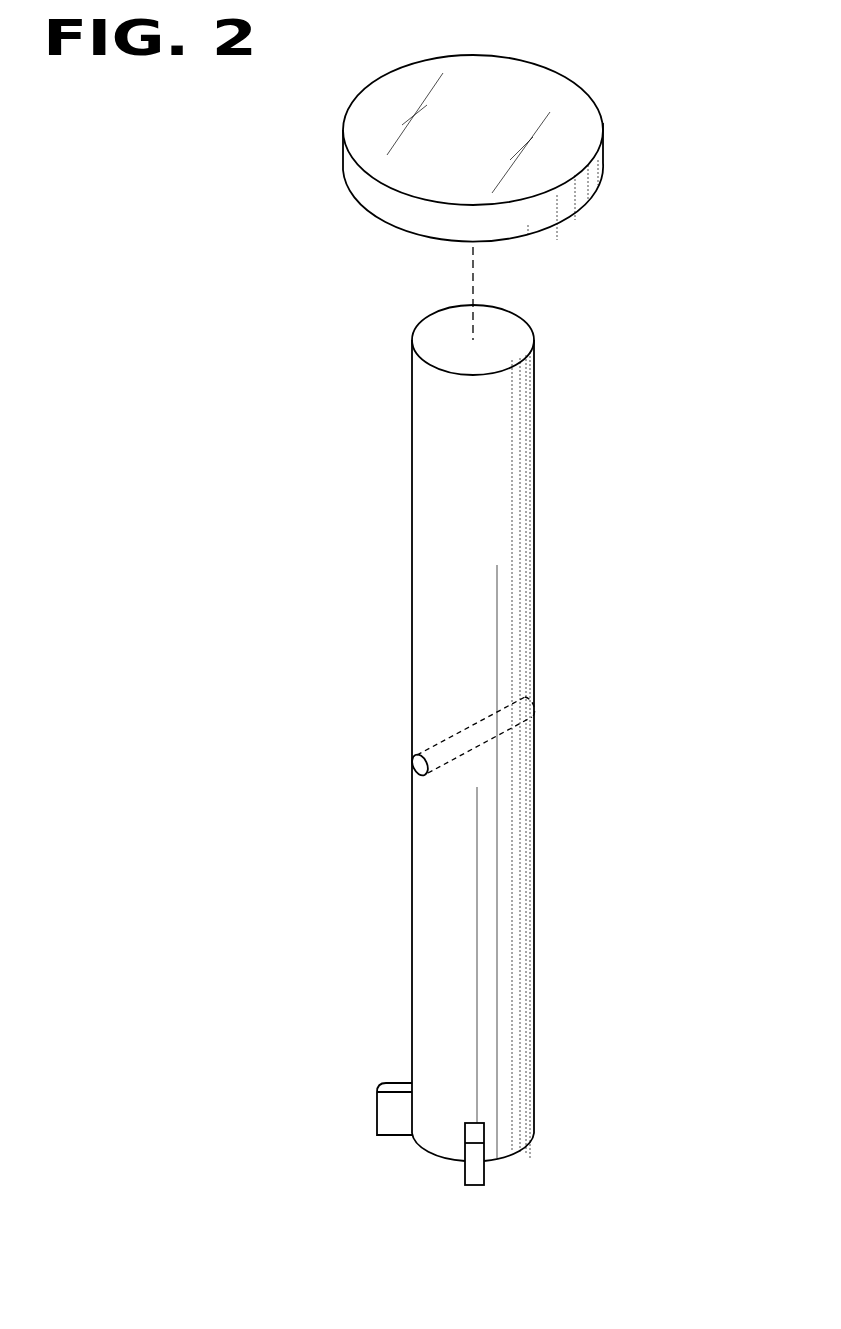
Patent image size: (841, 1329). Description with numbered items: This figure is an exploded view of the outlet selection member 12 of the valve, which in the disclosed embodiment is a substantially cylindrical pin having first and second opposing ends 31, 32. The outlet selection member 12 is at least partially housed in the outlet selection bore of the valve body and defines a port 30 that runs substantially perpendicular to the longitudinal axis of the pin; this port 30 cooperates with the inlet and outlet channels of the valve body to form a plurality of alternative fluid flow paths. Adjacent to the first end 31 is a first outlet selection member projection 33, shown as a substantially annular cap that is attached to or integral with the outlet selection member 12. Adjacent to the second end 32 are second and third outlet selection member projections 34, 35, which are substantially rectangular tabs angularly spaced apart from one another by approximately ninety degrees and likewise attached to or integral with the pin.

The outlet selection member 12 is at (505, 568).
The port 30 is at (413, 767).
The first end 31 is at (527, 377).
The second end 32 is at (522, 1109).
The first outlet selection member projection 33 is at (568, 105).
The second outlet selection member projection 34 is at (387, 1108).
The third outlet selection member projection 35 is at (473, 1177).